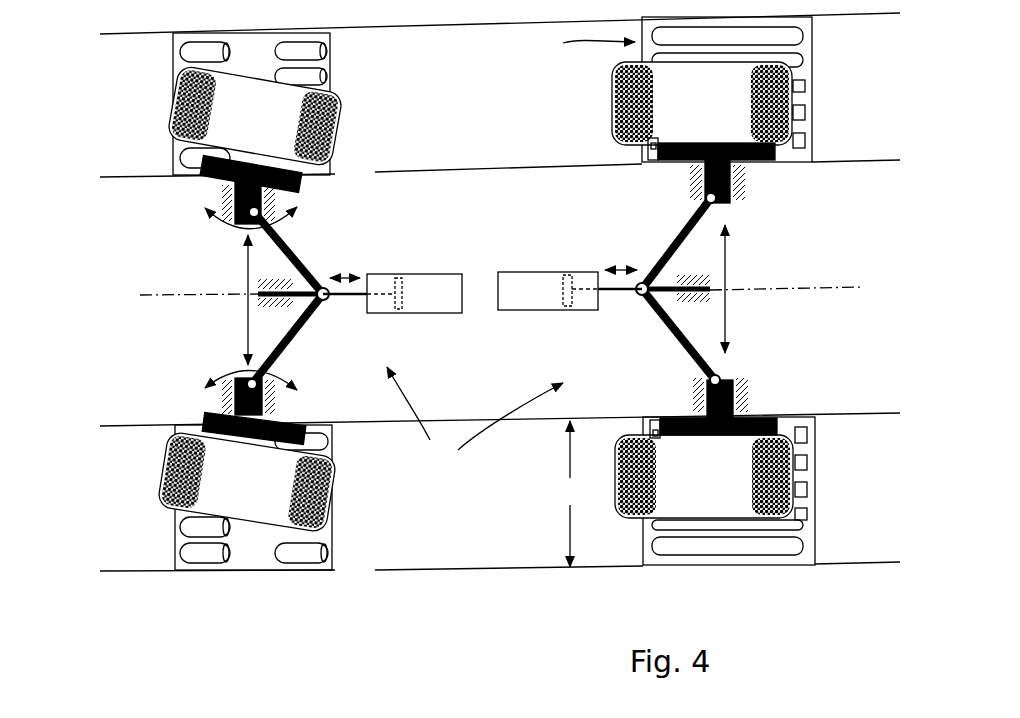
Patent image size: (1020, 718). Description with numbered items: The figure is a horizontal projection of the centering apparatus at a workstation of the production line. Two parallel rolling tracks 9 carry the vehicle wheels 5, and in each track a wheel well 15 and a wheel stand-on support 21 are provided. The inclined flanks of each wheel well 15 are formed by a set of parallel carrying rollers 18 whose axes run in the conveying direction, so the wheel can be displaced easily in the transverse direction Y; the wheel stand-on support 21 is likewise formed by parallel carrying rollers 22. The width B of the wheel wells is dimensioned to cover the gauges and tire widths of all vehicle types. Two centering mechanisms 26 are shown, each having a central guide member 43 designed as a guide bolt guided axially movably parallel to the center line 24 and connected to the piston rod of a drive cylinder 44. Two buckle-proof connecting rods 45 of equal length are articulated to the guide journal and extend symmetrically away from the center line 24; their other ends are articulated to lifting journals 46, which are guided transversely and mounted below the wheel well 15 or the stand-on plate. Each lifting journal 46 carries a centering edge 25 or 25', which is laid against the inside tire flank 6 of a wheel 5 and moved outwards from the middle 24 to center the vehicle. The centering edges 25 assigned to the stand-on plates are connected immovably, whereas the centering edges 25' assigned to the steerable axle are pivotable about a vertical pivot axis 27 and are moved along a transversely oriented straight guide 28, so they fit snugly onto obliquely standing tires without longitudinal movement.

The vehicle wheel 5 is at (613, 107).
The tire flank 6 is at (635, 147).
The rolling track 9 is at (508, 112).
The wheel well 15 is at (345, 174).
The carrying rollers 18 is at (180, 158).
The wheel stand-on support 21 is at (580, 52).
The carrying rollers 22 is at (803, 36).
The center line 24 is at (805, 285).
The centering edge 25 is at (746, 289).
The pivotable centering edge 25' is at (263, 299).
The centering mechanism 26 is at (475, 419).
The pivot axis 27 is at (247, 177).
The straight guide 28 is at (222, 220).
The guide member 43 is at (303, 300).
The drive cylinder 44 is at (427, 273).
The connecting rods 45 is at (672, 242).
The lifting journal 46 is at (240, 368).
The width of the wheel wells B is at (570, 494).
The transverse direction Y is at (248, 323).